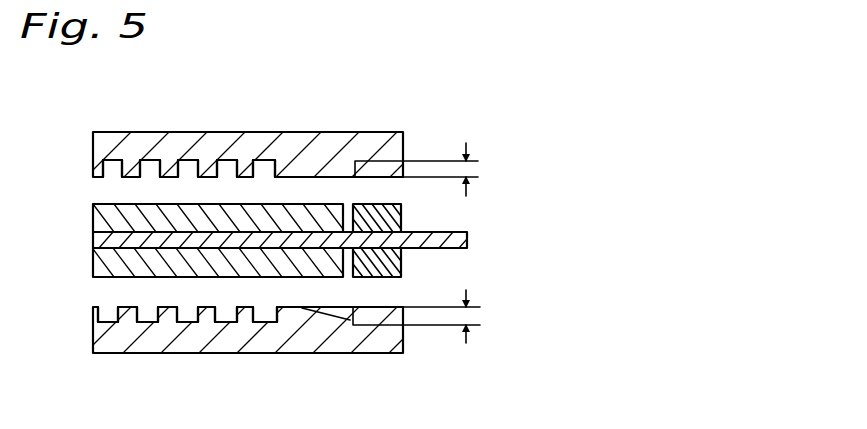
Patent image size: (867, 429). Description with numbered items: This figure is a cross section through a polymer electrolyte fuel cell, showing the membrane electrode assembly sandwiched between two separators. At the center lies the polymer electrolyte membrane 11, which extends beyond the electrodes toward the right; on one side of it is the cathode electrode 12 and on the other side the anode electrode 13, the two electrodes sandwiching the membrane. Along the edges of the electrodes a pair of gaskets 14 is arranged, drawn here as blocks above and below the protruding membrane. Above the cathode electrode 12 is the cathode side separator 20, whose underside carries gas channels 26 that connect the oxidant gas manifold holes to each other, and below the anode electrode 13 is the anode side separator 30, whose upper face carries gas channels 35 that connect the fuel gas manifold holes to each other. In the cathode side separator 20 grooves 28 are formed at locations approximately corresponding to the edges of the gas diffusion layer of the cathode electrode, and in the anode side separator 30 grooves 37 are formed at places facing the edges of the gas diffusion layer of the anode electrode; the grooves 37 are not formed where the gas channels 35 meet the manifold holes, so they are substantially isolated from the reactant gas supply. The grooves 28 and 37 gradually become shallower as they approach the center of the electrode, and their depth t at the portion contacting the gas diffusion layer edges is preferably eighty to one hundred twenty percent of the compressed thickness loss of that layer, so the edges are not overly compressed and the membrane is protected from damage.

The polymer electrolyte membrane 11 is at (460, 243).
The cathode electrode 12 is at (92, 217).
The anode electrode 13 is at (92, 262).
The gaskets 14 is at (396, 213).
The cathode side separator 20 is at (294, 126).
The gas channels 26 is at (151, 166).
The grooves 28 is at (312, 173).
The anode side separator 30 is at (294, 352).
The gas channels 35 is at (149, 316).
The grooves 37 is at (341, 318).